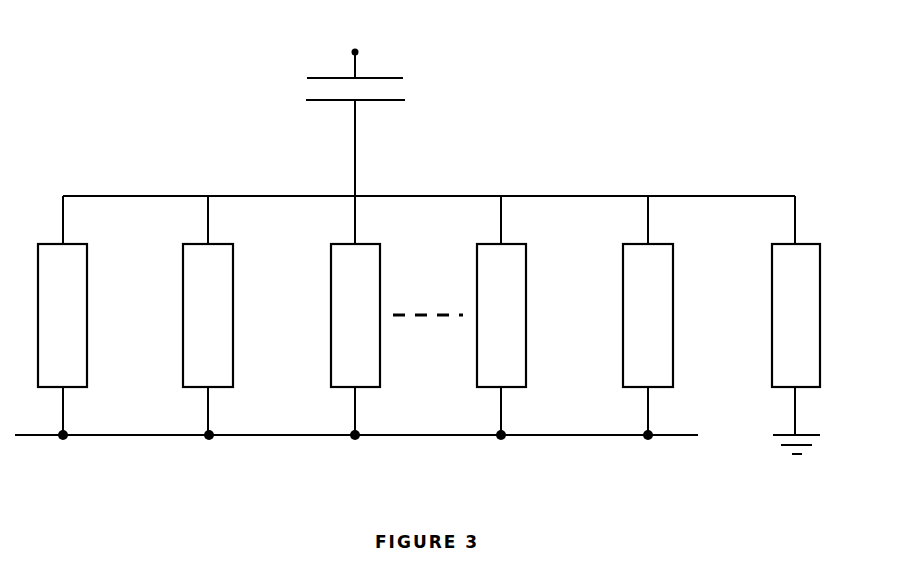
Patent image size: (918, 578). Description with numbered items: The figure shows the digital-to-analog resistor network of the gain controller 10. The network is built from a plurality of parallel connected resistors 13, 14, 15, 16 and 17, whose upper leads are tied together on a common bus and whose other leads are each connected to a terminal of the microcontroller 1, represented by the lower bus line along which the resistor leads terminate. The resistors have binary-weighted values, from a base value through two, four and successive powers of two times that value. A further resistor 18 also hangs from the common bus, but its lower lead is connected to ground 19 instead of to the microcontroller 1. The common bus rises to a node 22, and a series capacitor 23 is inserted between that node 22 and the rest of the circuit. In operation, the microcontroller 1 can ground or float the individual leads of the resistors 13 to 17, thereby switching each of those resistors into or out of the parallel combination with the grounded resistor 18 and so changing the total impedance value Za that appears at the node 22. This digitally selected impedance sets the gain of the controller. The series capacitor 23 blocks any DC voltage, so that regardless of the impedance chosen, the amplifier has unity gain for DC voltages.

The microcontroller 1 is at (145, 437).
The gain controller 10 is at (142, 146).
The resistor 13 is at (78, 276).
The resistor 14 is at (223, 275).
The resistor 15 is at (368, 270).
The resistor 16 is at (513, 270).
The resistor 17 is at (660, 270).
The resistor 18 is at (812, 270).
The ground 19 is at (808, 444).
The node 22 is at (360, 50).
The series capacitor 23 is at (322, 92).